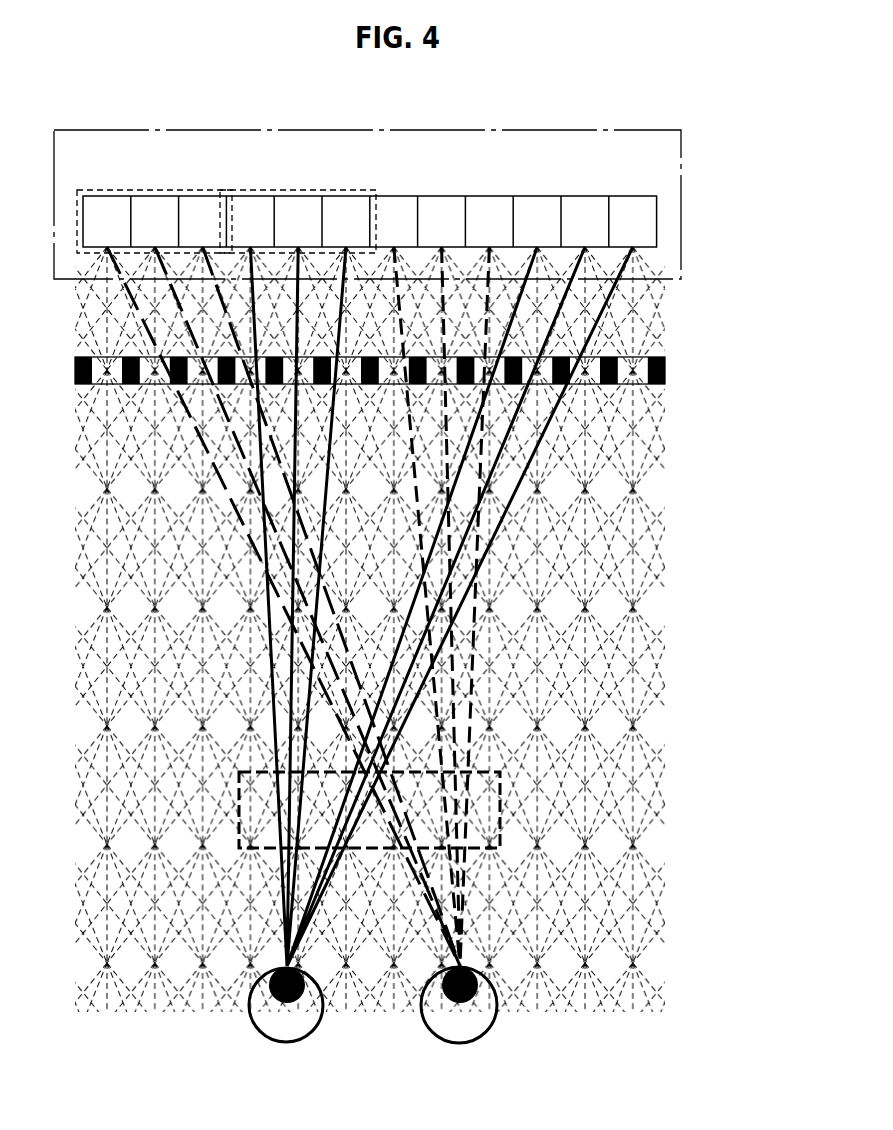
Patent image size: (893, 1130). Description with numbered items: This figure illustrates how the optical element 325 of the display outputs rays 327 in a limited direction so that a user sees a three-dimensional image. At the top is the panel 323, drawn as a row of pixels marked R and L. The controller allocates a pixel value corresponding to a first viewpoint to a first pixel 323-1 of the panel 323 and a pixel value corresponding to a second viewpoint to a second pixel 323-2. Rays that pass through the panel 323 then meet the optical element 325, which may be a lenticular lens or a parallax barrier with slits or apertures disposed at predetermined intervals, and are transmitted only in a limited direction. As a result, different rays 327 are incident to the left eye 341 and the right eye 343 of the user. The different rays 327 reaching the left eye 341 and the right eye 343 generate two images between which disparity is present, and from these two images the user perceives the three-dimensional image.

The panel 323 is at (557, 130).
The first pixel 323-1 is at (155, 190).
The second pixel 323-2 is at (300, 190).
The optical element 325 is at (667, 371).
The rays 327 is at (500, 811).
The left eye 341 is at (315, 1032).
The right eye 343 is at (487, 1032).